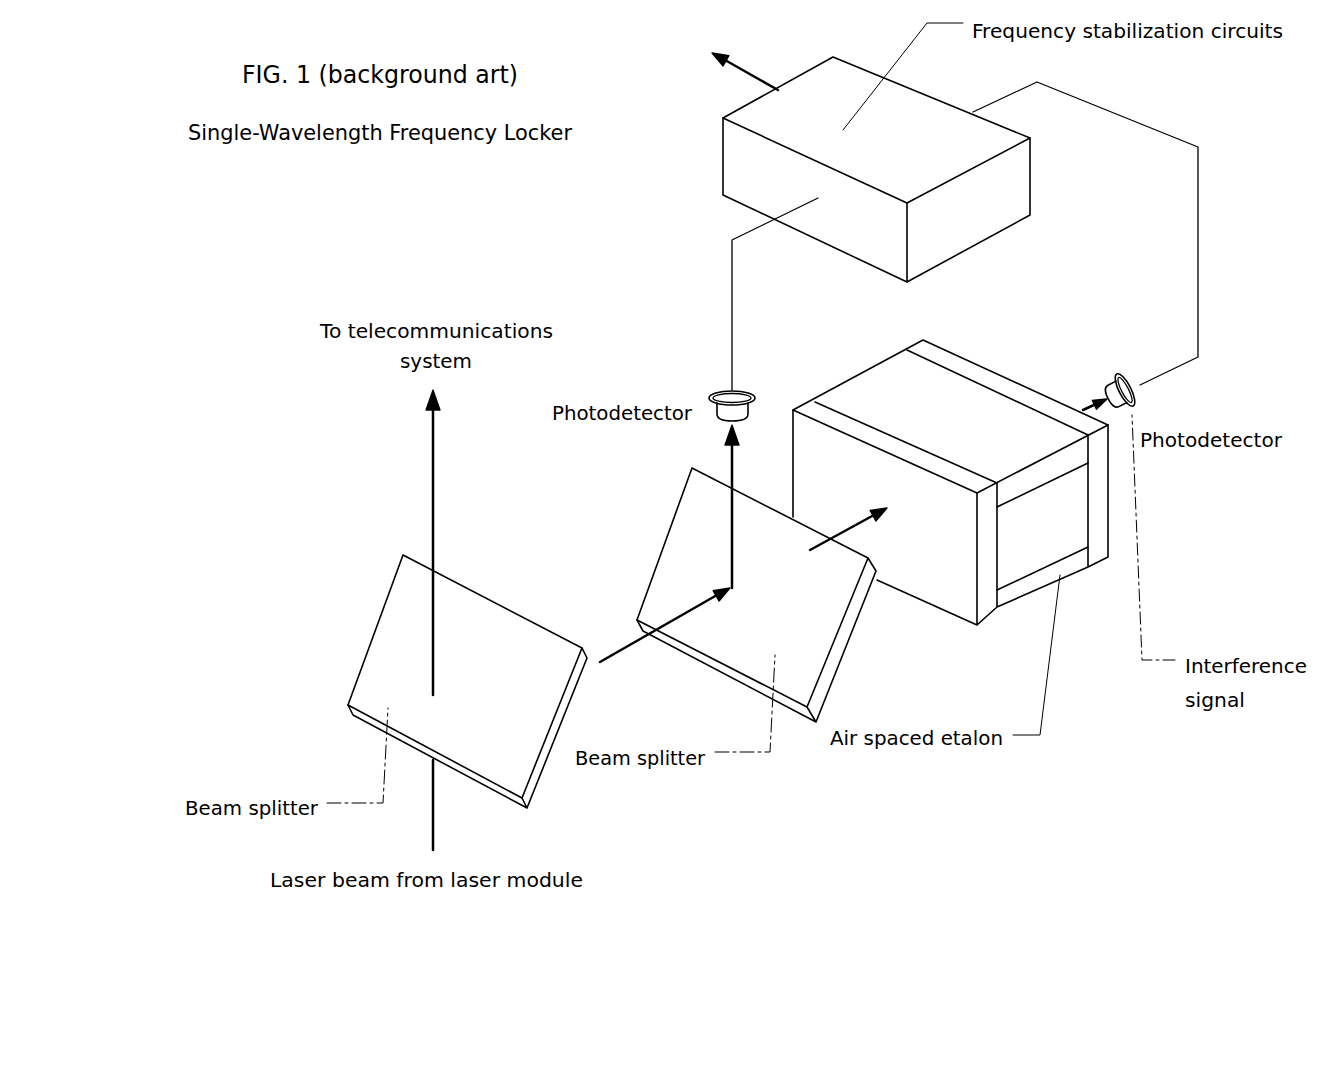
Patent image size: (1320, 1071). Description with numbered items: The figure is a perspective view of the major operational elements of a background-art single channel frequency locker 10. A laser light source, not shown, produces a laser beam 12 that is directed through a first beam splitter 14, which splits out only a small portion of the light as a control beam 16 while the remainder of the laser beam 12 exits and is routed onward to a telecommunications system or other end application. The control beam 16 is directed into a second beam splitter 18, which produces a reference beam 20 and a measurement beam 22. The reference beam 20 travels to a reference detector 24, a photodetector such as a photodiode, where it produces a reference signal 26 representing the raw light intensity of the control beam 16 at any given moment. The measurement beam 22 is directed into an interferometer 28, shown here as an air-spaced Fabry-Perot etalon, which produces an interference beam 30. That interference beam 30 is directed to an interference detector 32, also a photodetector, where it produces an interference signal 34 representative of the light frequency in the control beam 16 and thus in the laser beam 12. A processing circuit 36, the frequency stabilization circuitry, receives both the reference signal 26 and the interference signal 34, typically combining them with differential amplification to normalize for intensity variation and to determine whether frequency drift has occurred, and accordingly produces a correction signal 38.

The single channel frequency locker 10 is at (222, 225).
The laser beam 12 is at (433, 483).
The first beam splitter 14 is at (521, 692).
The control beam 16 is at (609, 667).
The second beam splitter 18 is at (812, 597).
The reference beam 20 is at (731, 467).
The measurement beam 22 is at (860, 528).
The reference detector 24 is at (751, 388).
The reference signal 26 is at (732, 296).
The interferometer 28 is at (961, 432).
The interference beam 30 is at (1083, 406).
The interference detector 32 is at (1116, 372).
The interference signal 34 is at (1197, 197).
The processing circuit 36 is at (913, 169).
The correction signal 38 is at (745, 74).